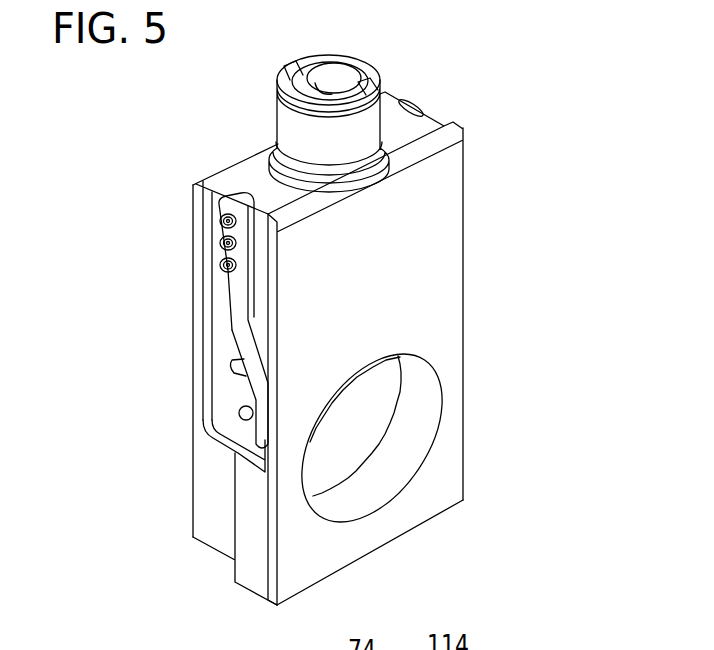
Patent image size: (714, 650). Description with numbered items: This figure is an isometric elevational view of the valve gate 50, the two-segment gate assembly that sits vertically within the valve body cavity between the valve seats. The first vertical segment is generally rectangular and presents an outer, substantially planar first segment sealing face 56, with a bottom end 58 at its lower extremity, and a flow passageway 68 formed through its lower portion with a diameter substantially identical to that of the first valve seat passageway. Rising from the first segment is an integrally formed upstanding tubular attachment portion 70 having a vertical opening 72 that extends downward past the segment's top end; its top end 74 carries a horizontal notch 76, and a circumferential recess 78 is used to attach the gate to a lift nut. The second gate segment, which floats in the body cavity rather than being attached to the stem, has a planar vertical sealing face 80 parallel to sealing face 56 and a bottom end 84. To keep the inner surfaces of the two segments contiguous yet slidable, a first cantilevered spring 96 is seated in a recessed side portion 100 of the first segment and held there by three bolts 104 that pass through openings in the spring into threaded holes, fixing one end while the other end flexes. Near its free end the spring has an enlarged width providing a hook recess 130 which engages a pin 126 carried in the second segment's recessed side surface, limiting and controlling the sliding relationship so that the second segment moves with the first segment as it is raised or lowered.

The valve gate 50 is at (503, 224).
The first segment sealing face 56 is at (192, 474).
The bottom end 58 is at (210, 550).
The flow passageway 68 is at (360, 425).
The tubular attachment portion 70 is at (287, 125).
The vertical opening 72 is at (344, 78).
The top end 74 is at (340, 58).
The horizontal notch 76 is at (300, 63).
The circumferential recess 78 is at (290, 170).
The sealing face 80 is at (437, 316).
The bottom end 84 is at (255, 601).
The first cantilevered spring 96 is at (222, 327).
The recessed side portion 100 is at (220, 313).
The bolts 104 is at (219, 263).
The pin 126 is at (239, 414).
The hook recess 130 is at (268, 427).